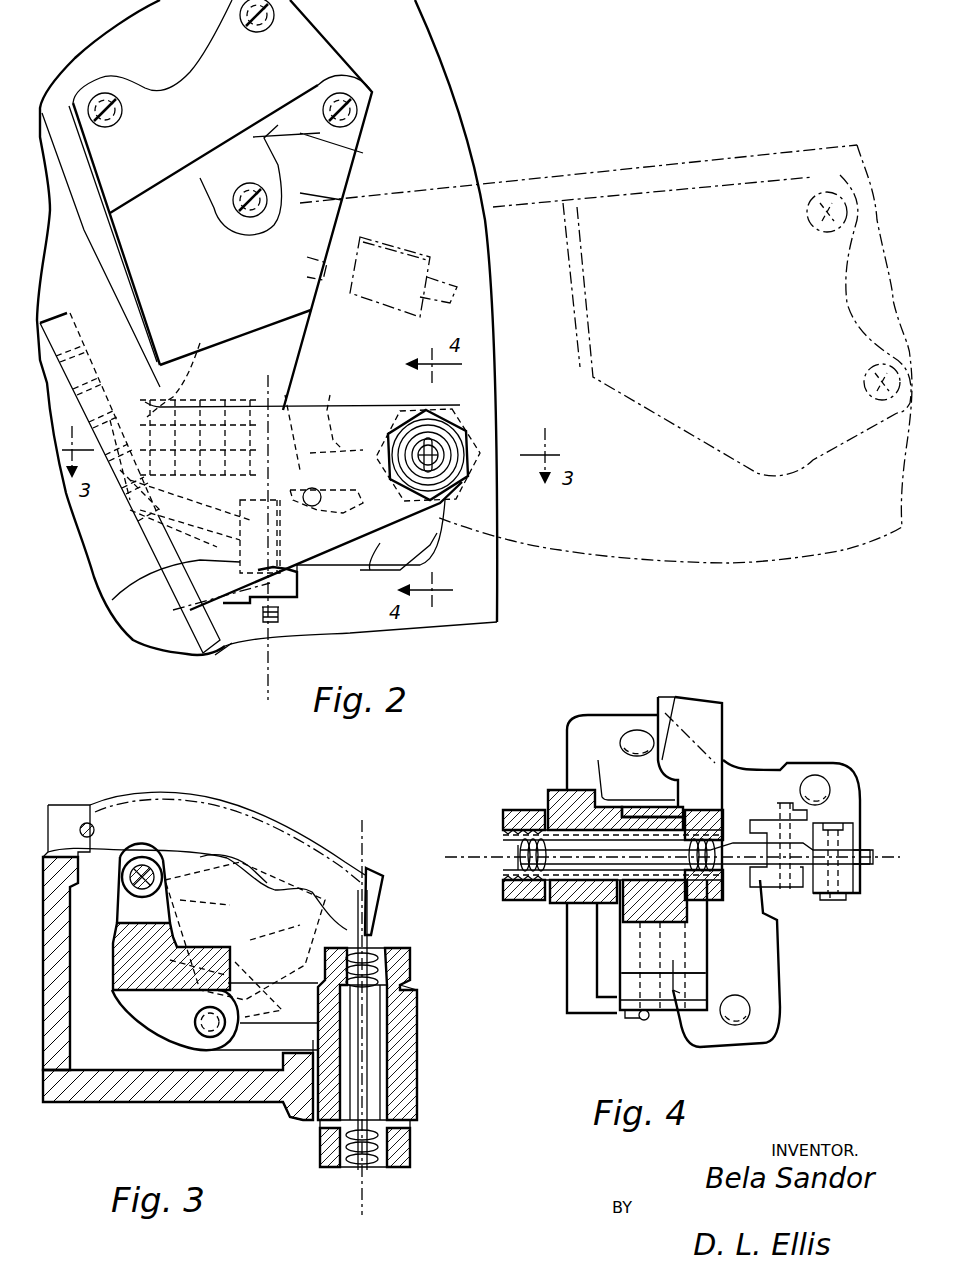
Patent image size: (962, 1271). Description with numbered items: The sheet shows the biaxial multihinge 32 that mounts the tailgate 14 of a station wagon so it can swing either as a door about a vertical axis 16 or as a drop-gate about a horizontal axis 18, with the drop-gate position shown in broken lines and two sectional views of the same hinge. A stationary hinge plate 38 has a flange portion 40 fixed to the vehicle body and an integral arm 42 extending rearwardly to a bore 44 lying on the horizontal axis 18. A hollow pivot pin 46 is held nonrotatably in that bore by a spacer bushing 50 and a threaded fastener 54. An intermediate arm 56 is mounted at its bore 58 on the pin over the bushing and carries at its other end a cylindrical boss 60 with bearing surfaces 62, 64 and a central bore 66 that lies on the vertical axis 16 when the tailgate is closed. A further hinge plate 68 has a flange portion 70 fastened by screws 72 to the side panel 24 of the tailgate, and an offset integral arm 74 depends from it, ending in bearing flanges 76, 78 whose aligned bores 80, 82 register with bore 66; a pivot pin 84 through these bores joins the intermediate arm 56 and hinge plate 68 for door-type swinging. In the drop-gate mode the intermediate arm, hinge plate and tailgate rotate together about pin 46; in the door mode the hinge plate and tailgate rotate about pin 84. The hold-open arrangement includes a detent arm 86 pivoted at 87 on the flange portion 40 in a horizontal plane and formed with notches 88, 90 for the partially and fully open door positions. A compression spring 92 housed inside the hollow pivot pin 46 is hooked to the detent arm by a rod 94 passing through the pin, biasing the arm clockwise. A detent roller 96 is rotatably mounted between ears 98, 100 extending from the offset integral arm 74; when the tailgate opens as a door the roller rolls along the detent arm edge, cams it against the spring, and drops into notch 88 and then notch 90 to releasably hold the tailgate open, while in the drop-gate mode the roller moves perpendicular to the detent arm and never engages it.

In FIG. 2, the tailgate 14 is at (473, 160).
In FIG. 2, the vertical axis 16 is at (262, 693).
In FIG. 3, the horizontal axis 18 is at (368, 1190).
In FIG. 4, the horizontal axis 18 is at (457, 854).
In FIG. 2, the side panel 24 is at (433, 50).
In FIG. 2, the biaxial multihinge 32 is at (232, 643).
In FIG. 3, the biaxial multihinge 32 is at (387, 882).
In FIG. 4, the biaxial multihinge 32 is at (730, 748).
In FIG. 2, the stationary hinge plate 38 is at (349, 546).
In FIG. 3, the stationary hinge plate 38 is at (186, 1102).
In FIG. 4, the stationary hinge plate 38 is at (579, 716).
In FIG. 2, the flange portion 40 is at (109, 603).
In FIG. 3, the flange portion 40 is at (40, 1103).
In FIG. 4, the flange portion 40 is at (782, 1043).
In FIG. 2, the integral arm 42 is at (370, 530).
In FIG. 3, the integral arm 42 is at (253, 1107).
In FIG. 4, the integral arm 42 is at (570, 933).
In FIG. 3, the bore 44 is at (393, 1098).
In FIG. 4, the bore 44 is at (556, 807).
In FIG. 3, the hollow pivot pin 46 is at (405, 975).
In FIG. 4, the hollow pivot pin 46 is at (690, 902).
In FIG. 3, the spacer bushing 50 is at (403, 987).
In FIG. 4, the spacer bushing 50 is at (687, 902).
In FIG. 2, the threaded fastener 54 is at (473, 418).
In FIG. 3, the threaded fastener 54 is at (408, 1145).
In FIG. 4, the threaded fastener 54 is at (505, 810).
In FIG. 2, the intermediate arm 56 is at (298, 322).
In FIG. 3, the intermediate arm 56 is at (283, 1108).
In FIG. 4, the intermediate arm 56 is at (620, 923).
In FIG. 3, the bore 58 is at (417, 1010).
In FIG. 4, the bore 58 is at (635, 805).
In FIG. 2, the cylindrical boss 60 is at (398, 248).
In FIG. 2, the bearing surface 62 is at (318, 491).
In FIG. 2, the bearing surface 64 is at (293, 602).
In FIG. 4, the bearing surface 64 is at (667, 963).
In FIG. 2, the central bore 66 is at (231, 528).
In FIG. 4, the central bore 66 is at (637, 960).
In FIG. 2, the hinge plate 68 is at (340, 51).
In FIG. 3, the hinge plate 68 is at (113, 973).
In FIG. 4, the hinge plate 68 is at (656, 716).
In FIG. 2, the flange portion 70 is at (167, 97).
In FIG. 2, the screws 72 is at (259, 33).
In FIG. 2, the offset integral arm 74 is at (157, 375).
In FIG. 3, the offset integral arm 74 is at (115, 932).
In FIG. 4, the offset integral arm 74 is at (702, 697).
In FIG. 2, the bearing flange 76 is at (185, 470).
In FIG. 2, the bearing flange 78 is at (301, 550).
In FIG. 4, the bearing flange 78 is at (677, 990).
In FIG. 2, the bore 80 is at (302, 432).
In FIG. 2, the bore 82 is at (213, 614).
In FIG. 4, the bore 82 is at (633, 988).
In FIG. 2, the pivot pin 84 is at (260, 613).
In FIG. 3, the pivot pin 84 is at (198, 1024).
In FIG. 4, the pivot pin 84 is at (643, 1020).
In FIG. 2, the detent arm 86 is at (329, 446).
In FIG. 3, the detent arm 86 is at (268, 830).
In FIG. 4, the detent arm 86 is at (870, 850).
In FIG. 2, the pivot mount 87 is at (182, 368).
In FIG. 3, the pivot mount 87 is at (89, 823).
In FIG. 4, the pivot mount 87 is at (840, 893).
In FIG. 3, the notch 88 is at (221, 860).
In FIG. 3, the notch 90 is at (300, 887).
In FIG. 2, the compression spring 92 is at (432, 438).
In FIG. 3, the compression spring 92 is at (360, 1172).
In FIG. 4, the compression spring 92 is at (518, 860).
In FIG. 2, the rod 94 is at (450, 454).
In FIG. 3, the rod 94 is at (370, 1062).
In FIG. 4, the rod 94 is at (735, 847).
In FIG. 3, the detent roller 96 is at (141, 858).
In FIG. 4, the detent roller 96 is at (767, 897).
In FIG. 4, the ear 98 is at (770, 803).
In FIG. 3, the ear 100 is at (120, 850).
In FIG. 4, the ear 100 is at (777, 907).